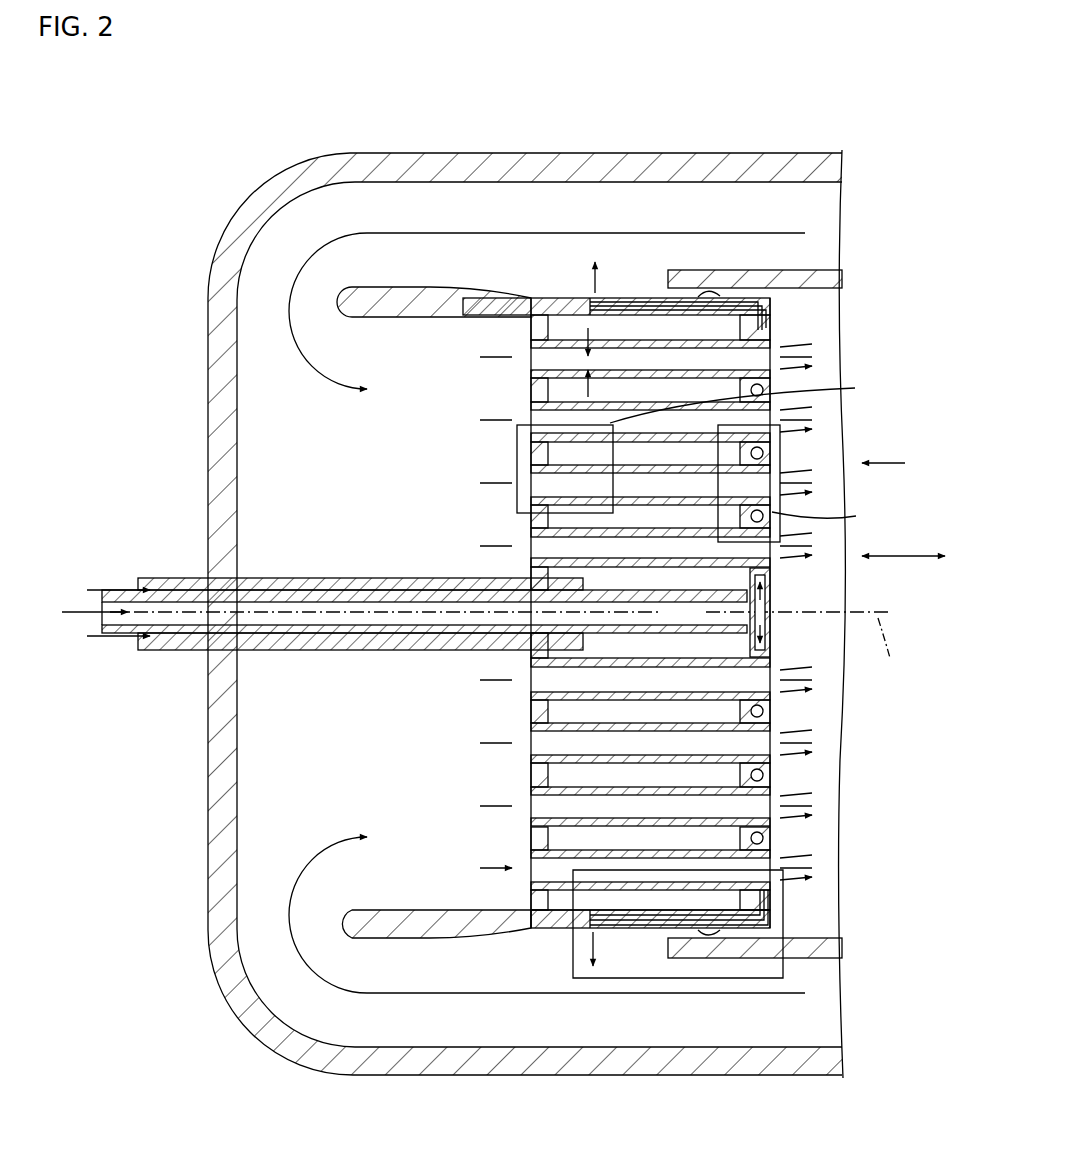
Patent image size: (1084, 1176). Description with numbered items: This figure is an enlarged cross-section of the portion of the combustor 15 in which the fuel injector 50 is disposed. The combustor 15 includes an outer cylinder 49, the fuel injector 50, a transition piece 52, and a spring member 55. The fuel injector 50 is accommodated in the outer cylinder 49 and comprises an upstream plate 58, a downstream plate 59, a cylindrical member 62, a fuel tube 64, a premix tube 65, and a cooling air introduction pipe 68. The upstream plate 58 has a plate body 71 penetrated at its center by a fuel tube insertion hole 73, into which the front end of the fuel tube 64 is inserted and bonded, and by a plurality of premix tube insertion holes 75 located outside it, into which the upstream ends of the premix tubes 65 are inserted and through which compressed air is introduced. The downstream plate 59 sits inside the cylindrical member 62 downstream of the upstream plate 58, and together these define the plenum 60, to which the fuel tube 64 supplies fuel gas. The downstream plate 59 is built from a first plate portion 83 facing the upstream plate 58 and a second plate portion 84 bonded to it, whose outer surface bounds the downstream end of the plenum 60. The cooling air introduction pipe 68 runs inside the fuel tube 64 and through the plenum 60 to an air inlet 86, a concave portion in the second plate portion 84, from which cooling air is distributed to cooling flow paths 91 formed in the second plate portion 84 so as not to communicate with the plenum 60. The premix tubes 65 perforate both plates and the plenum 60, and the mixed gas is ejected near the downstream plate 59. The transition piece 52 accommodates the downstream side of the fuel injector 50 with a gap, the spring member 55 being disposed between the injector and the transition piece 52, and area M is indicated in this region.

The combustor 15 is at (168, 104).
The outer cylinder 49 is at (765, 153).
The transition piece 52 is at (825, 268).
The spring member 55 is at (705, 290).
The upstream plate 58 is at (520, 901).
The downstream plate 59 is at (776, 777).
The plenum 60 is at (647, 332).
The cylindrical member 62 is at (548, 294).
The fuel tube 64 is at (165, 578).
The premix tube 65 is at (525, 760).
The cooling air introduction pipe 68 is at (182, 643).
The plate body 71 is at (534, 912).
The fuel tube insertion hole 73 is at (535, 632).
The premix tube insertion hole 75 is at (527, 362).
The first plate portion 83 is at (773, 647).
The second plate portion 84 is at (770, 700).
The air inlet 86 is at (772, 578).
The cooling flow path 91 is at (770, 833).
The fuel injector 50 is at (417, 740).
The area M is at (785, 915).